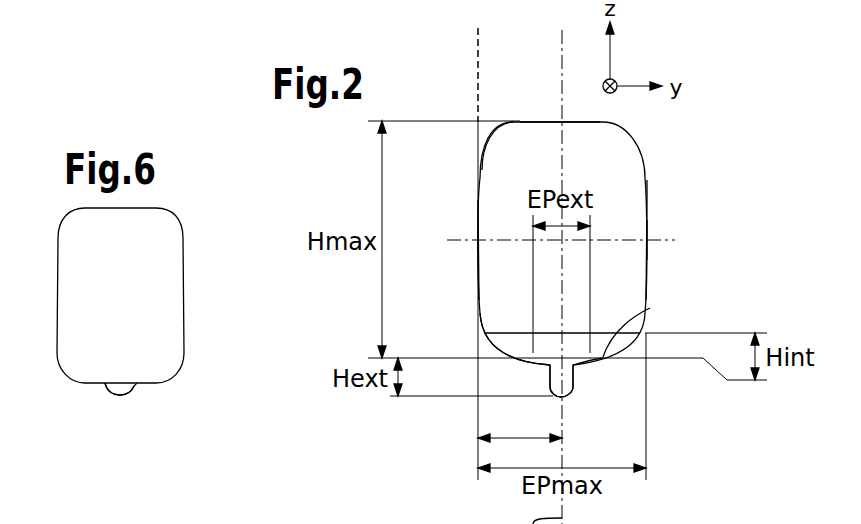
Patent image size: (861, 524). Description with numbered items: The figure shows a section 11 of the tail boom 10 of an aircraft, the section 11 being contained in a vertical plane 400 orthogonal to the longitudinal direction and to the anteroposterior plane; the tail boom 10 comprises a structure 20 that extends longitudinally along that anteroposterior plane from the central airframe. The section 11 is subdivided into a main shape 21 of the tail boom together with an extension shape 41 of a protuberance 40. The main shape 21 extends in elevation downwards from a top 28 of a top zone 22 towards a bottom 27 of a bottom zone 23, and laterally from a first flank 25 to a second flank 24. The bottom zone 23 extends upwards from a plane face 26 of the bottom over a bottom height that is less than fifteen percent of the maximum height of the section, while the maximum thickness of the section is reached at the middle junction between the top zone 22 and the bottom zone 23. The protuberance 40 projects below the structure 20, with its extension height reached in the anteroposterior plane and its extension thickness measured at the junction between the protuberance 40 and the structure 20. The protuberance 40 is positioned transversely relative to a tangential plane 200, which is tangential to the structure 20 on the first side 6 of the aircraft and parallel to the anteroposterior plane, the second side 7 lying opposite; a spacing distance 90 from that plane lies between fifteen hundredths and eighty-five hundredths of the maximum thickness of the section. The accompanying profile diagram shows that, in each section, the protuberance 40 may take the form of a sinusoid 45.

In FIG. 2, the first side 6 is at (347, 279).
In FIG. 2, the second side 7 is at (717, 238).
In FIG. 2, the tail boom 10 is at (686, 188).
In FIG. 2, the section 11 is at (670, 148).
In FIG. 2, the structure 20 is at (623, 132).
In FIG. 2, the main shape 21 is at (616, 177).
In FIG. 2, the top zone 22 is at (490, 131).
In FIG. 2, the bottom zone 23 is at (489, 343).
In FIG. 2, the second flank 24 is at (648, 252).
In FIG. 2, the first flank 25 is at (478, 250).
In FIG. 2, the plane face 26 is at (650, 308).
In FIG. 2, the bottom 27 is at (550, 364).
In FIG. 2, the top 28 is at (565, 122).
In FIG. 6, the protuberance 40 is at (105, 396).
In FIG. 2, the protuberance 40 is at (573, 366).
In FIG. 2, the extension shape 41 is at (570, 370).
In FIG. 6, the sinusoid 45 is at (119, 389).
In FIG. 2, the spacing distance 90 is at (520, 425).
In FIG. 2, the tangential plane 200 is at (478, 63).
In FIG. 2, the vertical plane 400 is at (775, 320).